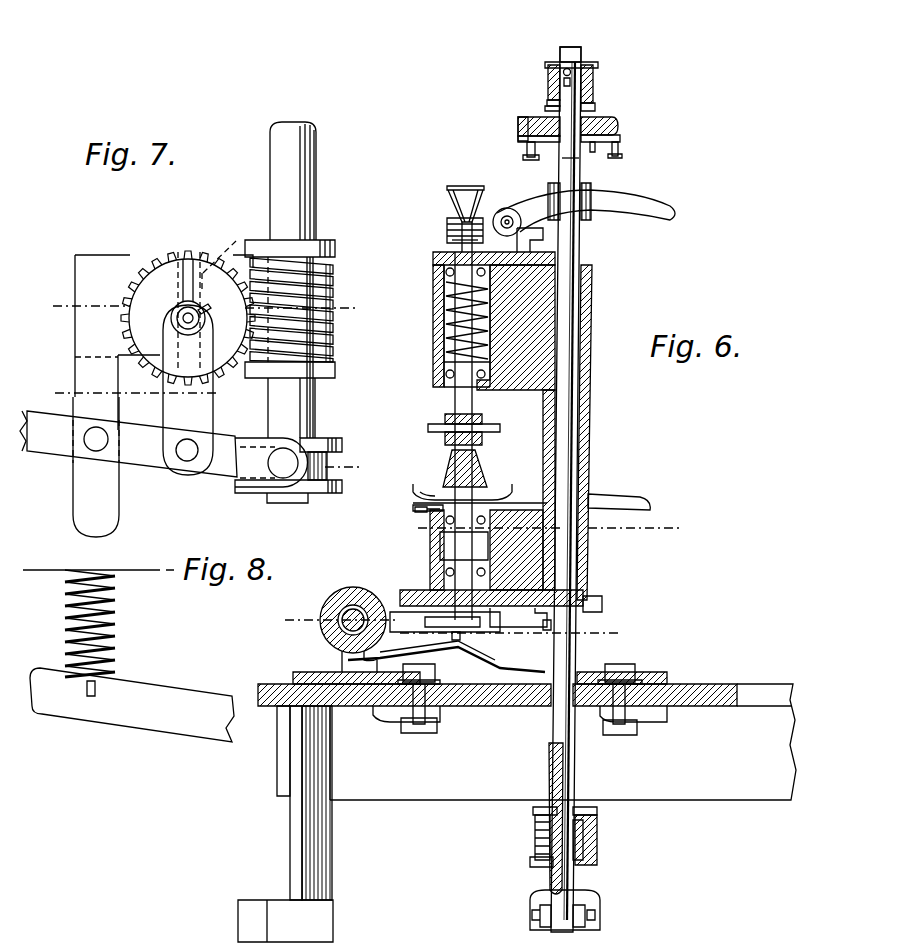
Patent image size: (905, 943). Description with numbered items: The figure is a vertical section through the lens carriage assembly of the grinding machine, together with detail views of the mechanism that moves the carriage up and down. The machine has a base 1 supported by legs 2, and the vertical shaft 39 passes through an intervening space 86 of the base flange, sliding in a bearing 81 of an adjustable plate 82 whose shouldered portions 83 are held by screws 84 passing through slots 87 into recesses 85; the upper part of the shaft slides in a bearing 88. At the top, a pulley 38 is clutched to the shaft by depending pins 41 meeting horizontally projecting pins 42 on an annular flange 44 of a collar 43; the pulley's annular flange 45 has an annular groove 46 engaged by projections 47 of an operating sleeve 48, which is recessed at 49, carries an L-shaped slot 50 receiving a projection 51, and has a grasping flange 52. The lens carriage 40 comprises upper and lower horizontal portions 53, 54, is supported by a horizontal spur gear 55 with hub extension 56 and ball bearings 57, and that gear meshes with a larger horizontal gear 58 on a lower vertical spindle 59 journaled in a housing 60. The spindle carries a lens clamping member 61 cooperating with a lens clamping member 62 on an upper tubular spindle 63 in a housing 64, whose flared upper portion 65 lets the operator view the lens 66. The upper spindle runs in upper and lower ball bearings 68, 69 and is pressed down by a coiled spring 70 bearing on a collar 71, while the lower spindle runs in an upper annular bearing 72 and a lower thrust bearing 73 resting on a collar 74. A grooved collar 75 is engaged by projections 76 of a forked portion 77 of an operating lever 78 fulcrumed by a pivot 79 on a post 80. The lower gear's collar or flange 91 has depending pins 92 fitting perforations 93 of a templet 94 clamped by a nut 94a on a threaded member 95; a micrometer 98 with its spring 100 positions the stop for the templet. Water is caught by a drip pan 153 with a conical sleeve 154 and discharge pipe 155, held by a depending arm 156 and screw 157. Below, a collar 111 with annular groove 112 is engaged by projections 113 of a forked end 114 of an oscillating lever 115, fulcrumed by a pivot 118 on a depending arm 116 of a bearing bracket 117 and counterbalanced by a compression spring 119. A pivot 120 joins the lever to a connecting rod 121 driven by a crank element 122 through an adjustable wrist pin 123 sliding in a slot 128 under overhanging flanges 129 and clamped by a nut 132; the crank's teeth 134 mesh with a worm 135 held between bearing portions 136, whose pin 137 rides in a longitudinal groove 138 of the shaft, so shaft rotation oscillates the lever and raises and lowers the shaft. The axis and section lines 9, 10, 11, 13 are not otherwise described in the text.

In FIG. 6, the base 1 is at (277, 784).
In FIG. 6, the legs 2 is at (300, 858).
In FIG. 7, the gear axis 9 is at (200, 308).
In FIG. 7, the pivot pin 10 is at (203, 431).
In FIG. 6, the housing center line 11 is at (418, 528).
In FIG. 6, the lower axis line 13 is at (451, 628).
In FIG. 6, the pulley 38 is at (597, 118).
In FIG. 6, the shaft 39 is at (575, 647).
In FIG. 7, the shaft 39 is at (302, 188).
In FIG. 6, the lens carriage 40 is at (590, 412).
In FIG. 6, the depending vertical pins 41 is at (518, 138).
In FIG. 6, the horizontally projecting pins 42 is at (620, 150).
In FIG. 6, the collar 43 is at (526, 150).
In FIG. 6, the annular flange 44 is at (616, 140).
In FIG. 6, the annular flange 45 is at (548, 107).
In FIG. 6, the annular groove 46 is at (518, 122).
In FIG. 6, the projections 47 is at (568, 160).
In FIG. 6, the operating sleeve 48 is at (594, 80).
In FIG. 6, the recess 49 is at (552, 100).
In FIG. 6, the L-shaped slot 50 is at (572, 70).
In FIG. 6, the projection 51 is at (572, 46).
In FIG. 6, the flange 52 is at (596, 64).
In FIG. 6, the upper horizontal portion 53 is at (516, 378).
In FIG. 6, the lower horizontal portion 54 is at (518, 508).
In FIG. 6, the horizontal spur gear 55 is at (604, 604).
In FIG. 6, the hub extension 56 is at (543, 631).
In FIG. 6, the ball bearings 57 is at (585, 592).
In FIG. 6, the horizontal gear 58 is at (430, 572).
In FIG. 6, the lower vertical spindle 59 is at (480, 462).
In FIG. 6, the housing 60 is at (440, 540).
In FIG. 6, the lens clamping member 61 is at (483, 440).
In FIG. 6, the lens clamping member 62 is at (448, 418).
In FIG. 6, the upper tubular spindle 63 is at (434, 300).
In FIG. 6, the housing 64 is at (440, 345).
In FIG. 6, the flared upper portion 65 is at (462, 188).
In FIG. 6, the lens 66 is at (428, 428).
In FIG. 6, the upper ball bearings 68 is at (435, 268).
In FIG. 6, the lower ball bearings 69 is at (443, 378).
In FIG. 6, the coiled spring 70 is at (446, 322).
In FIG. 6, the collar 71 is at (441, 362).
In FIG. 6, the upper annular bearing 72 is at (482, 478).
In FIG. 6, the lower thrust bearing 73 is at (520, 622).
In FIG. 6, the collar 74 is at (444, 580).
In FIG. 6, the grooved collar 75 is at (447, 220).
In FIG. 6, the projections 76 is at (448, 238).
In FIG. 6, the forked portion 77 is at (468, 200).
In FIG. 6, the operating lever 78 is at (640, 202).
In FIG. 6, the pivot 79 is at (534, 237).
In FIG. 6, the post 80 is at (505, 216).
In FIG. 6, the bearing 81 is at (530, 700).
In FIG. 6, the adjustable plate 82 is at (454, 706).
In FIG. 6, the shouldered portions 83 is at (405, 686).
In FIG. 6, the screws 84 is at (400, 712).
In FIG. 6, the recesses 85 is at (650, 722).
In FIG. 6, the intervening space 86 is at (460, 772).
In FIG. 6, the slots 87 is at (660, 686).
In FIG. 6, the bearing 88 is at (592, 218).
In FIG. 6, the collar or flange 91 is at (420, 622).
In FIG. 6, the depending pins 92 is at (448, 655).
In FIG. 6, the perforations 93 is at (412, 648).
In FIG. 6, the templet 94 is at (480, 621).
In FIG. 6, the nut 94a is at (462, 636).
In FIG. 6, the threaded member 95 is at (437, 658).
In FIG. 6, the micrometer 98 is at (346, 588).
In FIG. 6, the spring 100 is at (340, 630).
In FIG. 7, the collar 111 is at (330, 436).
In FIG. 7, the annular groove 112 is at (332, 452).
In FIG. 7, the projections 113 is at (322, 412).
In FIG. 7, the forked end 114 is at (252, 490).
In FIG. 7, the oscillating lever 115 is at (148, 470).
In FIG. 8, the oscillating lever 115 is at (140, 715).
In FIG. 7, the depending arm 116 is at (73, 510).
In FIG. 7, the bearing bracket 117 is at (75, 256).
In FIG. 7, the pivot 118 is at (88, 449).
In FIG. 8, the compression spring 119 is at (117, 634).
In FIG. 7, the pivot 120 is at (190, 478).
In FIG. 7, the connecting rod 121 is at (200, 410).
In FIG. 7, the crank element 122 is at (160, 275).
In FIG. 7, the adjustable wrist pin 123 is at (172, 312).
In FIG. 7, the slot 128 is at (226, 254).
In FIG. 7, the overhanging flanges 129 is at (190, 256).
In FIG. 7, the clamping nut 132 is at (206, 306).
In FIG. 7, the teeth 134 is at (242, 372).
In FIG. 6, the worm 135 is at (534, 830).
In FIG. 7, the worm 135 is at (334, 272).
In FIG. 6, the bearing portions 136 is at (532, 810).
In FIG. 7, the bearing portions 136 is at (330, 244).
In FIG. 6, the pin 137 is at (534, 852).
In FIG. 6, the longitudinal groove 138 is at (550, 786).
In FIG. 6, the drip pan 153 is at (440, 492).
In FIG. 6, the conical sleeve 154 is at (440, 482).
In FIG. 6, the discharge pipe 155 is at (600, 494).
In FIG. 6, the depending arm 156 is at (416, 502).
In FIG. 6, the screw 157 is at (418, 508).